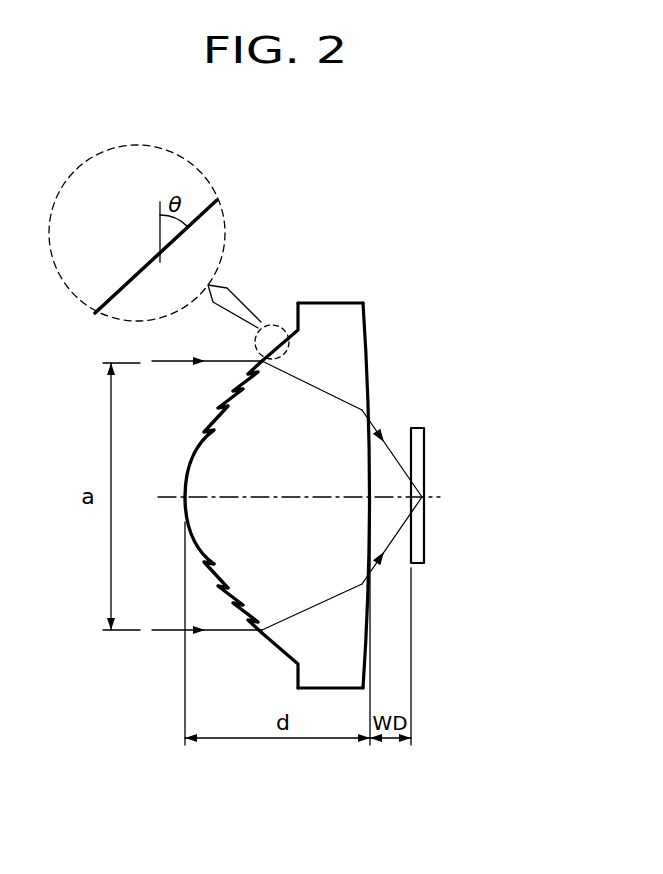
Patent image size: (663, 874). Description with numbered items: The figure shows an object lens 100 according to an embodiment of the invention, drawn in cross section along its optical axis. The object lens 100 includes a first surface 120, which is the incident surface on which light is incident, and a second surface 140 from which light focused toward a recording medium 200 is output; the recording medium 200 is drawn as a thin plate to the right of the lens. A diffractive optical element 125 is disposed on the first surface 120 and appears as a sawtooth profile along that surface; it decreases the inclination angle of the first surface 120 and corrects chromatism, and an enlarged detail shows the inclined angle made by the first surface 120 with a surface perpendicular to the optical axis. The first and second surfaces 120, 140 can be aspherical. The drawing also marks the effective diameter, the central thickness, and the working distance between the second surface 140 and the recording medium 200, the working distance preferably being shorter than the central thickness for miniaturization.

The object lens 100 is at (297, 468).
The first surface 120 is at (214, 504).
The diffractive optical element 125 is at (204, 431).
The second surface 140 is at (363, 391).
The recording medium 200 is at (418, 443).